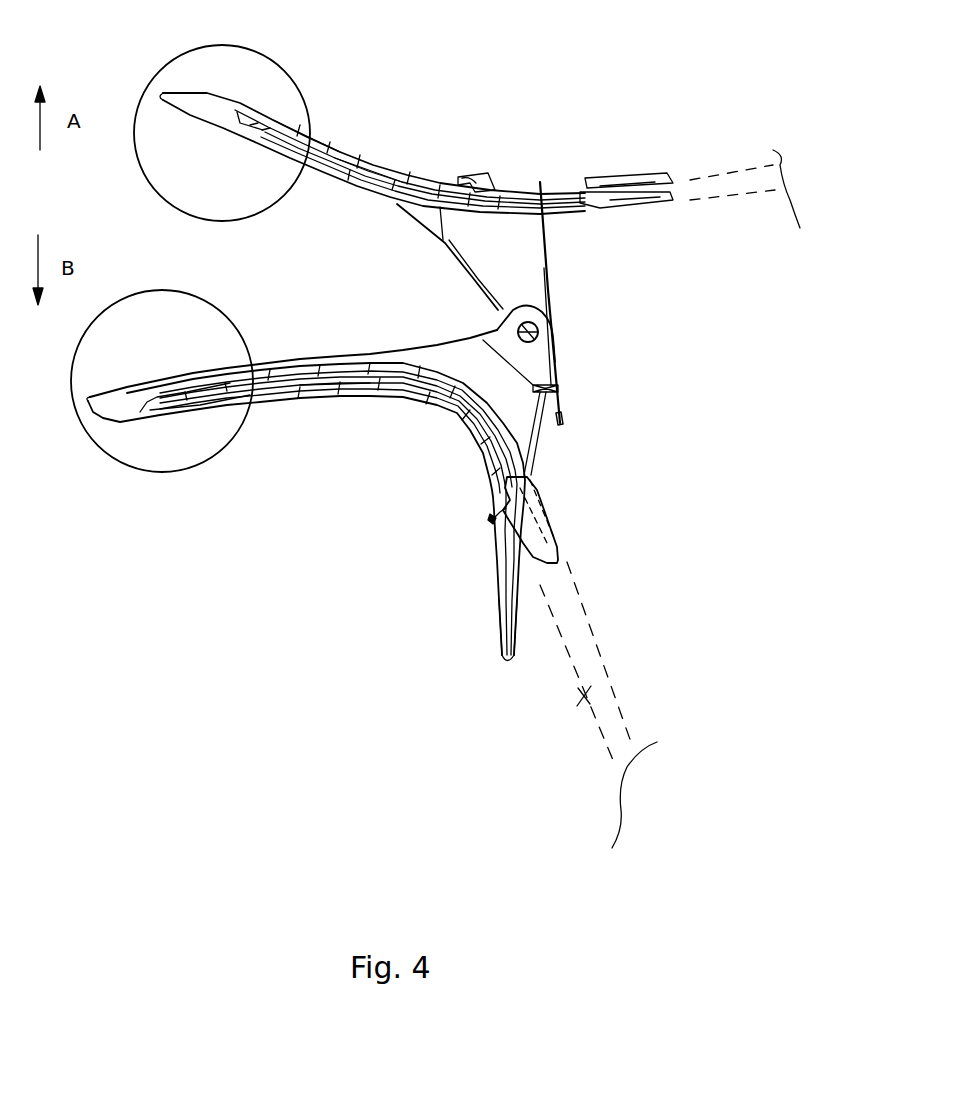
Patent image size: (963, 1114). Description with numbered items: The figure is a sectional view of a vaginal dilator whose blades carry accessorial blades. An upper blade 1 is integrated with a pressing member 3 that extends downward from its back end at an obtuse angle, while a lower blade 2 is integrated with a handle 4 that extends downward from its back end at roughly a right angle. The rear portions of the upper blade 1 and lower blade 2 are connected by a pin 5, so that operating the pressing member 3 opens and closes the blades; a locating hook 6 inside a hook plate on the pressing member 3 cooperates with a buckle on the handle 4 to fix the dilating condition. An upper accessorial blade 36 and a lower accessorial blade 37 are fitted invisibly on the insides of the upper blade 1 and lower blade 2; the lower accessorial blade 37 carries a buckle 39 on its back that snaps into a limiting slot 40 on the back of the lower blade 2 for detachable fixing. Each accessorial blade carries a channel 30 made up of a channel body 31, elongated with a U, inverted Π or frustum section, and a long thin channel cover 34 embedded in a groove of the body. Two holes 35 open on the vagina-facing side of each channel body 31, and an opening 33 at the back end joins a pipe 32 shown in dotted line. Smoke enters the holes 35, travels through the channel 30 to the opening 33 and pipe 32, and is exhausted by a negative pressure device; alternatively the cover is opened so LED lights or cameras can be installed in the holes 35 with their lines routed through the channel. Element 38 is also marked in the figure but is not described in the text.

The upper blade 1 is at (375, 198).
The lower blade 2 is at (343, 356).
The pressing member 3 is at (555, 342).
The handle 4 is at (513, 580).
The pin 5 is at (558, 357).
The locating hook 6 is at (566, 407).
The channel 30 is at (610, 180).
The channel body 31 is at (313, 160).
The pipe 32 is at (590, 685).
The opening 33 is at (675, 182).
The channel cover 34 is at (383, 192).
The hole 35 is at (293, 160).
The upper accessorial blade 36 is at (546, 190).
The lower accessorial blade 37 is at (380, 385).
The stop lug 38 is at (473, 185).
The buckle for lower accessorial blade 39 is at (492, 517).
The limiting slot 40 is at (493, 518).